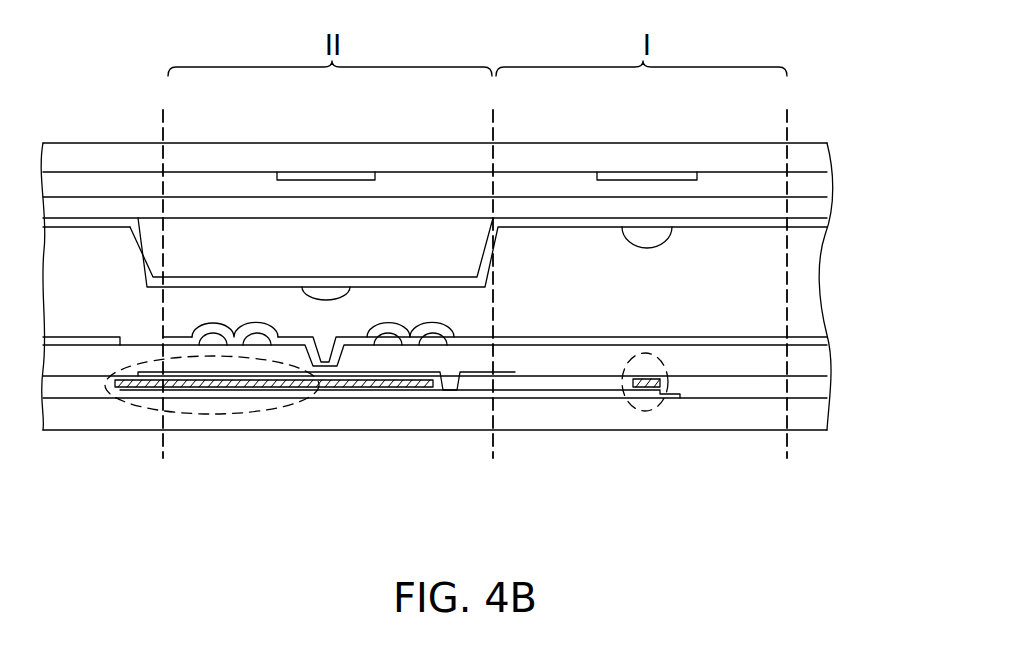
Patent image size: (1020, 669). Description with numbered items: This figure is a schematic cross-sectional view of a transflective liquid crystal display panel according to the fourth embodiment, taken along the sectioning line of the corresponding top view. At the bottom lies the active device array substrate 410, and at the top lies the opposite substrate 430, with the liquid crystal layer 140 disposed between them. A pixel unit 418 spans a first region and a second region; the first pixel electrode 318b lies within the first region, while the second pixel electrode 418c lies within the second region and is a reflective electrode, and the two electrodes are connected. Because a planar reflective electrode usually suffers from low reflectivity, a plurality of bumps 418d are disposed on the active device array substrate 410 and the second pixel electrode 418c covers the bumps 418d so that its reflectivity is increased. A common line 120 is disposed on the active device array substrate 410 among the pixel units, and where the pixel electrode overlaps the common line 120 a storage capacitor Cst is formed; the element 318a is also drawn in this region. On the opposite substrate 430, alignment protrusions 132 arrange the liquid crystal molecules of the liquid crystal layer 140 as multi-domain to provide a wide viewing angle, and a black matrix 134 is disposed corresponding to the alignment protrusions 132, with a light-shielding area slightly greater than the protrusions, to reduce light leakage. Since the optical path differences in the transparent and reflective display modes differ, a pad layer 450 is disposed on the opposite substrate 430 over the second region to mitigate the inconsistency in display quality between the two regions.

The opposite substrate 430 is at (843, 154).
The liquid crystal layer 140 is at (795, 262).
The pad layer 450 is at (210, 233).
The black matrix 134 is at (322, 172).
The alignment protrusions 132 is at (332, 293).
The common line 120 is at (143, 388).
The storage capacitor Cst is at (230, 414).
The bumps 418d is at (257, 340).
The second pixel electrode 418c is at (357, 343).
The pixel unit 418 is at (685, 500).
The first pixel electrode 318b is at (563, 341).
The electrode contact portion 318a is at (657, 407).
The active device array substrate 410 is at (755, 440).